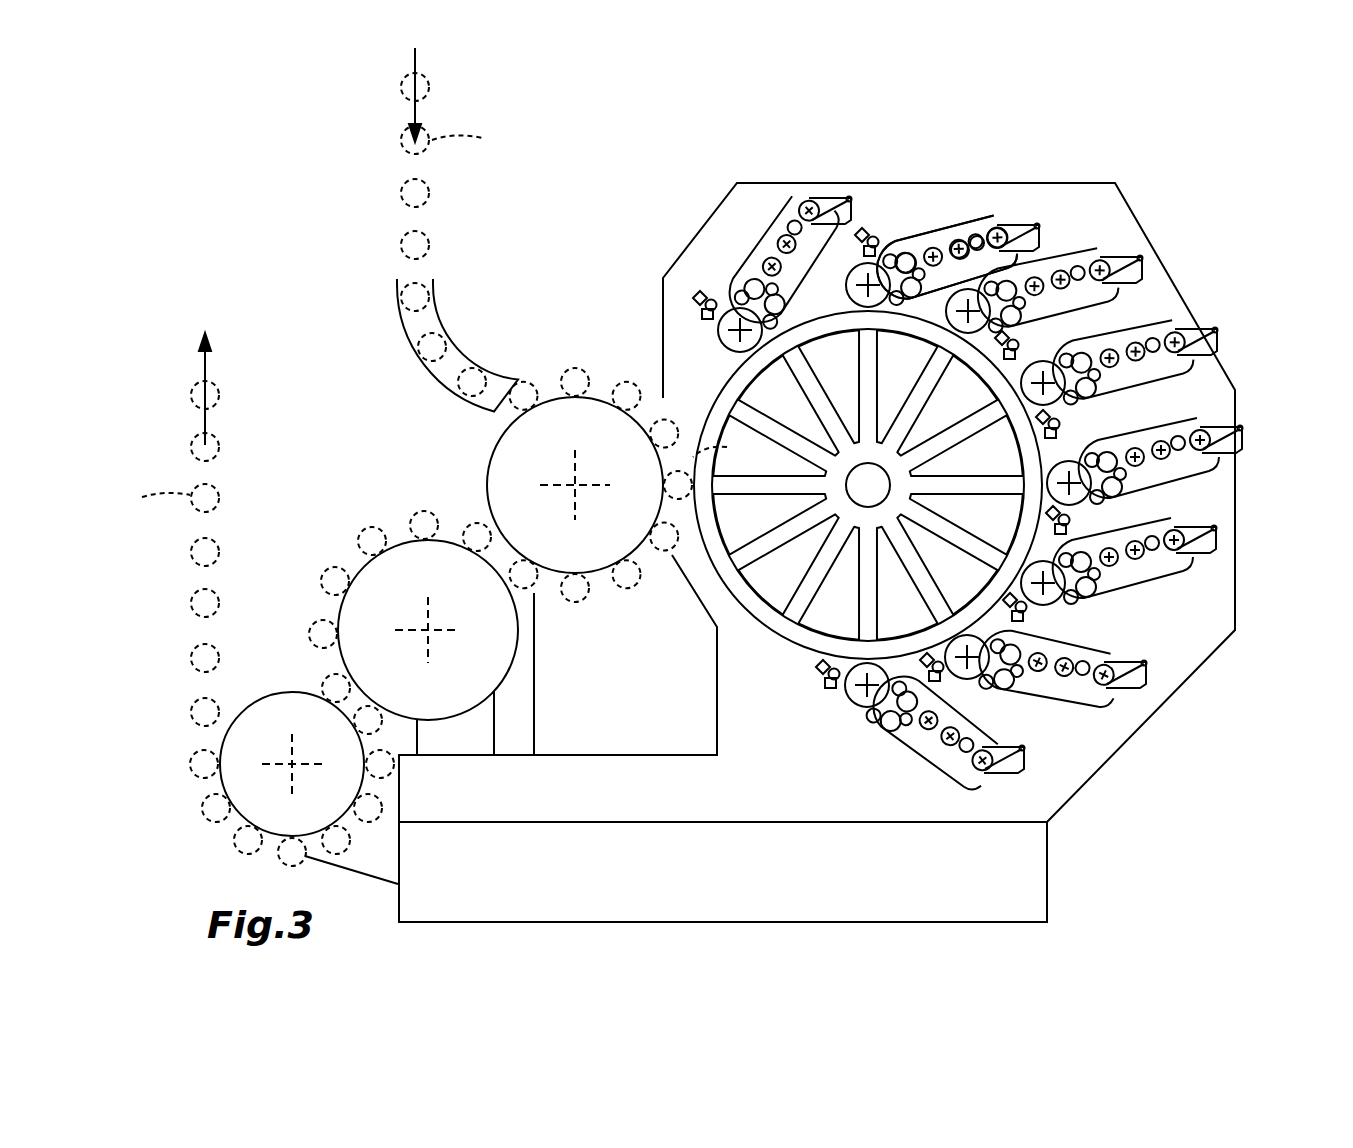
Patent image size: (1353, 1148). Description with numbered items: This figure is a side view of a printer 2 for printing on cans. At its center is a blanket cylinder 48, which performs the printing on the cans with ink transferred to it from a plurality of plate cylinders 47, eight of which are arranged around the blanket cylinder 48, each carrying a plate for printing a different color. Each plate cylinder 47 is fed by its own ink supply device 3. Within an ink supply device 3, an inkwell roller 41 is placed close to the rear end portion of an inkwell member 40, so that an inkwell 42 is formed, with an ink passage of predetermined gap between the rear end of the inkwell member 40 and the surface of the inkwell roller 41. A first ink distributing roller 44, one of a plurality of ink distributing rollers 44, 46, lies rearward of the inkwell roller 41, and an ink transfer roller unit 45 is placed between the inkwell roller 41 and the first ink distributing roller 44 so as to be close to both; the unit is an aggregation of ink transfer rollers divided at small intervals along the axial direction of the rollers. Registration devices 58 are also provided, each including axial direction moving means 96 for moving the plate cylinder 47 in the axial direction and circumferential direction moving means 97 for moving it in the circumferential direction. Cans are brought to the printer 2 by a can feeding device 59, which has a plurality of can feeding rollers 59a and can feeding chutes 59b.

The printer 2 is at (1195, 158).
The ink supply device 3 is at (1020, 230).
The inkwell member 40 is at (1040, 228).
The inkwell roller 41 is at (994, 227).
The inkwell 42 is at (1022, 224).
The first ink distributing roller 44 is at (955, 240).
The ink transfer roller unit 45 is at (978, 235).
The ink distributing roller 46 is at (912, 242).
The plate cylinder 47 is at (718, 333).
The blanket cylinder 48 is at (777, 637).
The registration device 58 is at (690, 230).
The can feeding device 59 is at (412, 440).
The can feeding roller 59a is at (398, 308).
The can feeding chute 59b is at (486, 486).
The axial direction moving means 96 is at (697, 297).
The circumferential direction moving means 97 is at (704, 318).